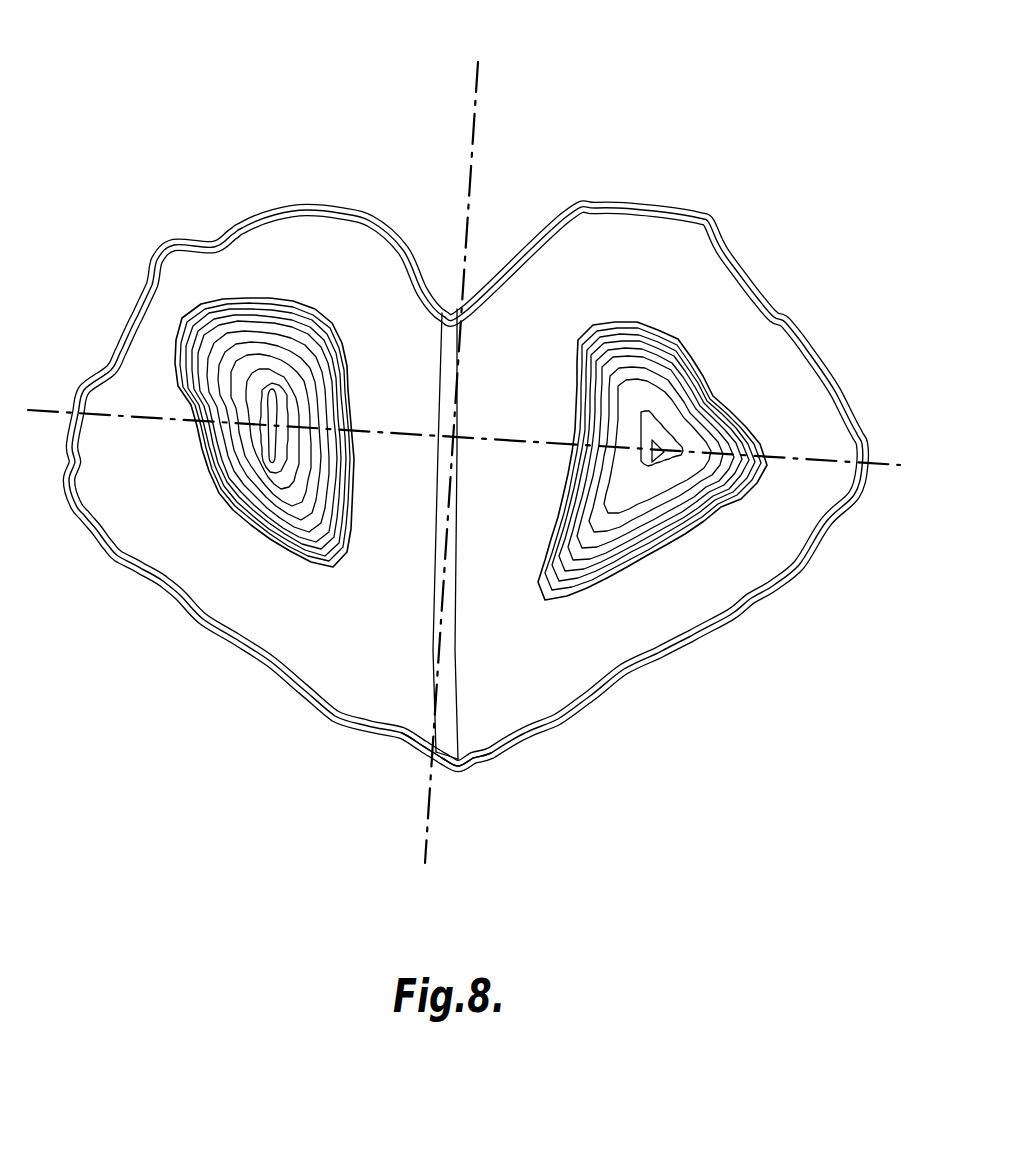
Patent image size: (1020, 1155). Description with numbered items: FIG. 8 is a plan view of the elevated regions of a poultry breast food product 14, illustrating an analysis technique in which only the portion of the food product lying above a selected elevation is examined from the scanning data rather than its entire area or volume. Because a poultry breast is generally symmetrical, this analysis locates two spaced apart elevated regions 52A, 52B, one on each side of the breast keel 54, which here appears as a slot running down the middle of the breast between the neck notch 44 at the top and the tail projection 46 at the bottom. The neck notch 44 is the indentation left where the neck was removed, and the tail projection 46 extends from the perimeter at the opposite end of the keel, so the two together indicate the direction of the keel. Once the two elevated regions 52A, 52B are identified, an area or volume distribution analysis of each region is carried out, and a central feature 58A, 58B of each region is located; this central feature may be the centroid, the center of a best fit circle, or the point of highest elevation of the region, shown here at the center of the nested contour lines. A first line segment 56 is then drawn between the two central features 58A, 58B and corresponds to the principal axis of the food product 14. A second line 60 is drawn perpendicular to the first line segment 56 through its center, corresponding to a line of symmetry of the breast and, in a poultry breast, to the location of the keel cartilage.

The food product 14 is at (792, 308).
The neck notch 44 is at (463, 275).
The tail projection 46 is at (420, 773).
The elevated region 52A is at (247, 513).
The elevated region 52B is at (630, 557).
The breast keel 54 is at (453, 733).
The first line segment 56 is at (880, 457).
The central feature 58A is at (273, 428).
The central feature 58B is at (657, 453).
The second line 60 is at (478, 88).